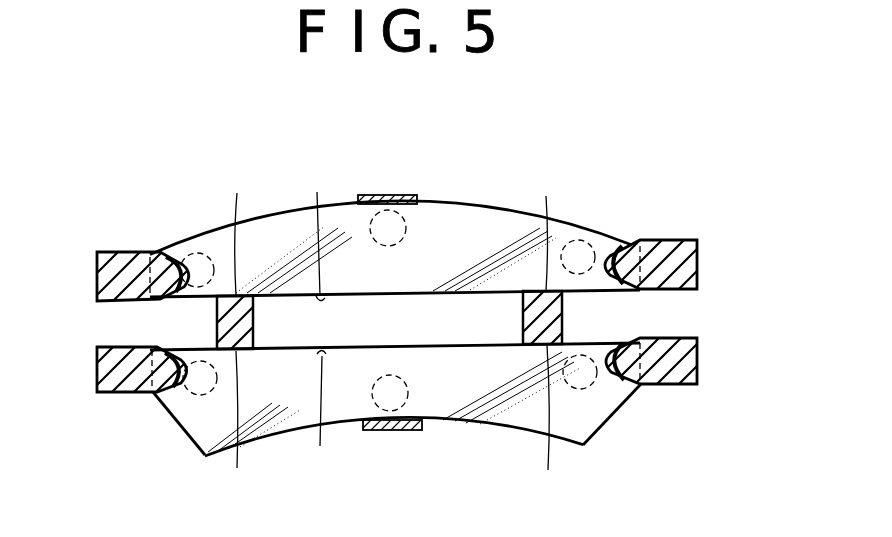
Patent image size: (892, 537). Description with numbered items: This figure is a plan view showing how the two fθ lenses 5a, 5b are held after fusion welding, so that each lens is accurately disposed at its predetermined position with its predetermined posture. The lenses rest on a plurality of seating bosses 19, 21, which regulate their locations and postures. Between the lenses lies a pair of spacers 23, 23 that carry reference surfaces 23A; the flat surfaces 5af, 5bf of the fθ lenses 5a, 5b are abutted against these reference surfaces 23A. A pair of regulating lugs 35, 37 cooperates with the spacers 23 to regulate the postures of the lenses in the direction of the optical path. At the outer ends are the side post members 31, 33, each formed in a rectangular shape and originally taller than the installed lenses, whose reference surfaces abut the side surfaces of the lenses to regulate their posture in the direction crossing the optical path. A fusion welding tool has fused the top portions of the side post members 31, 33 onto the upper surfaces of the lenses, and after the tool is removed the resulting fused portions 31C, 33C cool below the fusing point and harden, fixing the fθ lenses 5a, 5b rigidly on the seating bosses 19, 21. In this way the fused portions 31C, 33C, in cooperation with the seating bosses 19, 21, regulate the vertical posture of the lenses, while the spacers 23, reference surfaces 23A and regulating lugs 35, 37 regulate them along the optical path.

The fθ lens 5a is at (493, 426).
The fθ lens 5b is at (495, 215).
The flat surface 5af is at (303, 412).
The flat surface 5bf is at (315, 232).
The seating boss 19 is at (198, 396).
The seating boss 21 is at (197, 252).
The spacer 23 is at (253, 321).
The reference surface 23A is at (399, 331).
The side post member 31 is at (97, 372).
The fused portion 31C is at (168, 395).
The side post member 33 is at (97, 272).
The fused portion 33C is at (163, 270).
The regulating lug 35 is at (397, 430).
The regulating lug 37 is at (381, 195).